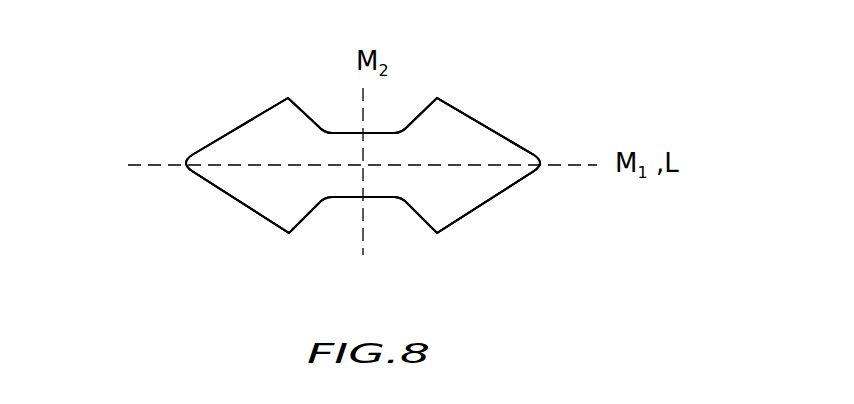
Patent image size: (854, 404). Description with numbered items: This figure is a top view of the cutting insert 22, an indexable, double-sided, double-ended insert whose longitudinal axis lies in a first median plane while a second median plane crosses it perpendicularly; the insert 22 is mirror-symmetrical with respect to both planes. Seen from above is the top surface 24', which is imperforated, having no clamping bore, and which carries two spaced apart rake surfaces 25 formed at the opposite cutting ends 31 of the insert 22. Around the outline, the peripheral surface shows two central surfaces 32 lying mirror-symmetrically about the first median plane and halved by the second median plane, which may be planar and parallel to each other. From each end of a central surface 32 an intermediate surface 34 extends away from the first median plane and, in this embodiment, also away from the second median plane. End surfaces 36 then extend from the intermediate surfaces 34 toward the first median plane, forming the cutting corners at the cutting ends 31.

The cutting insert 22 is at (168, 217).
The top surface 24' is at (485, 95).
The rake surface 25 is at (220, 180).
The cutting end 31 is at (182, 158).
The central surface 32 is at (342, 132).
The intermediate surface 34 is at (307, 110).
The end surface 36 is at (228, 130).